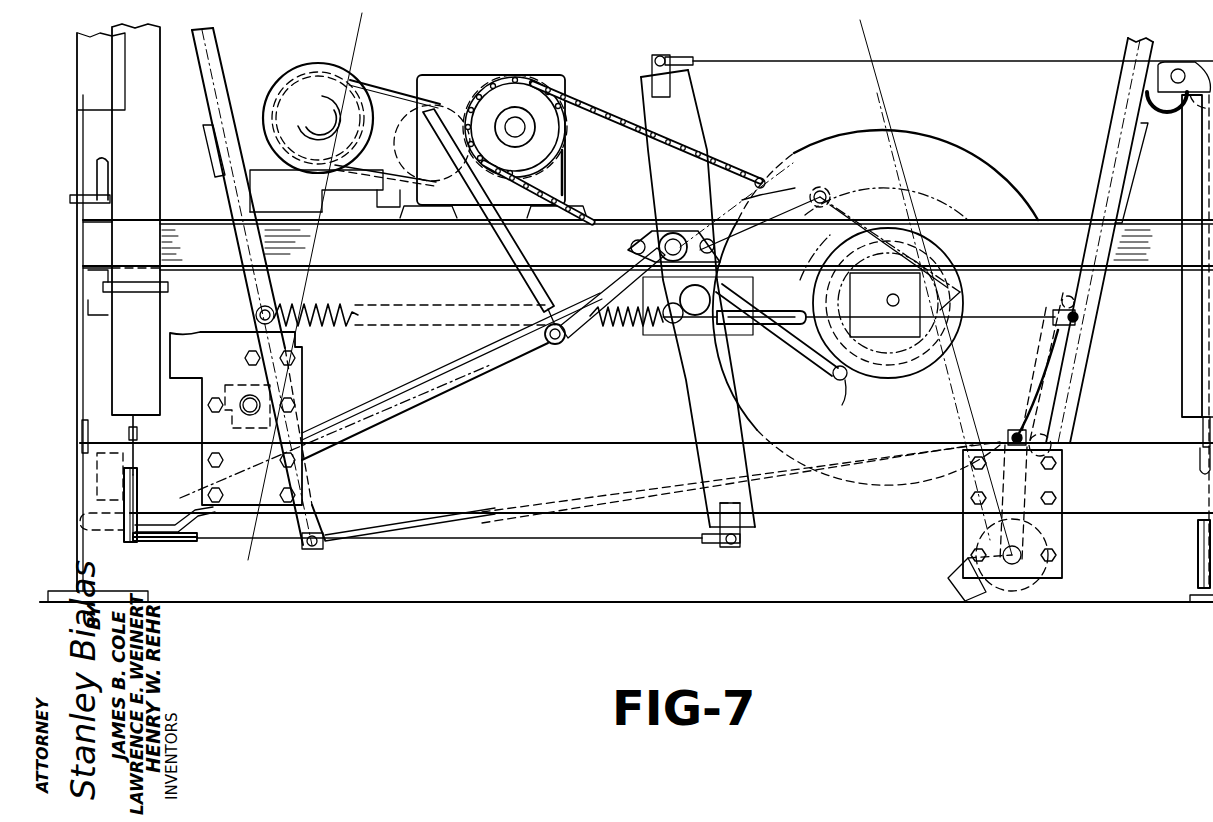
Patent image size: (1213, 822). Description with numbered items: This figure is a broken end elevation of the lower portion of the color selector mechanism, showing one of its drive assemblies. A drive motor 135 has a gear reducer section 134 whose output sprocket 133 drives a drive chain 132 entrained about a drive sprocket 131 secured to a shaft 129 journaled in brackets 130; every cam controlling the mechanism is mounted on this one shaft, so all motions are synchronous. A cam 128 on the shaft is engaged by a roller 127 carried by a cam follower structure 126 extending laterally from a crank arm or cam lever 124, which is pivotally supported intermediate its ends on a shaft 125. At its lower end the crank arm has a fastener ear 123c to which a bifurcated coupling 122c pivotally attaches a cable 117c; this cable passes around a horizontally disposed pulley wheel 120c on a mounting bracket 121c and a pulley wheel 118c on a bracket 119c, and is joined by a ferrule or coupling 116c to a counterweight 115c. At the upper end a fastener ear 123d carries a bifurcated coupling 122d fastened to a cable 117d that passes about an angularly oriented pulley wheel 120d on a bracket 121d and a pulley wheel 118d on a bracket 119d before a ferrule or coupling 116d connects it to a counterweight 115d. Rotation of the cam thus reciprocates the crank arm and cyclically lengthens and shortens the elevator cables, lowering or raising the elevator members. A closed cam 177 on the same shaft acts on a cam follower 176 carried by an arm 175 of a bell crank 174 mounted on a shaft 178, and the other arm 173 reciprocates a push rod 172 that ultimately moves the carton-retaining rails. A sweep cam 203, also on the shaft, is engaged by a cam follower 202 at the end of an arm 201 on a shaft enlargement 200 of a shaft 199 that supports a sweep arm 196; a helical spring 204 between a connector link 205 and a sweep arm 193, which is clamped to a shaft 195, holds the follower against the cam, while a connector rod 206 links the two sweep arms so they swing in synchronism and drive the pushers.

The counterweight 115c is at (178, 103).
The counterweight 115d is at (1183, 362).
The ferrule or coupling 116c is at (138, 440).
The ferrule or coupling 116d is at (1203, 432).
The cable 117c is at (138, 470).
The cable 117d is at (985, 40).
The pulley wheel 118c is at (140, 490).
The pulley wheel 118d is at (1198, 547).
The bracket 119c is at (87, 444).
The bracket 119d is at (1208, 496).
The horizontally disposed pulley wheel 120c is at (188, 543).
The angularly oriented pulley wheel 120d is at (1140, 100).
The mounting bracket 121c is at (212, 515).
The bracket 121d is at (1205, 40).
The bifurcated coupling 122c is at (712, 545).
The bifurcated coupling 122d is at (680, 55).
The fastener ear 123c is at (742, 535).
The fastener ear 123d is at (652, 50).
The crank arm or cam lever 124 is at (692, 128).
The shaft 125 is at (688, 304).
The cam follower structure 126 is at (742, 175).
The roller 127 is at (826, 188).
The cam 128 is at (880, 180).
The shaft 129 is at (882, 330).
The brackets 130 is at (930, 275).
The drive sprocket 131 is at (900, 390).
The drive chain 132 is at (628, 135).
The output sprocket 133 is at (518, 78).
The gear reducer section 134 is at (442, 82).
The drive motor 135 is at (322, 64).
The push rod 172 is at (490, 240).
The arm 173 is at (565, 335).
The bell crank 174 is at (600, 281).
The arm 175 is at (752, 296).
The lever arm 176 is at (835, 383).
The closed cam 177 is at (845, 405).
The shaft 178 is at (664, 232).
The sweep arm 193 is at (215, 42).
The shaft 195 is at (248, 393).
The sweep arm 196 is at (1130, 52).
The shaft 199 is at (963, 588).
The shaft enlargement 200 is at (1020, 585).
The arm 201 is at (1028, 400).
The cam follower 202 is at (1080, 307).
The sweep cam 203 is at (1020, 190).
The helical spring 204 is at (348, 330).
The connector link 205 is at (887, 302).
The connector rod 206 is at (575, 495).